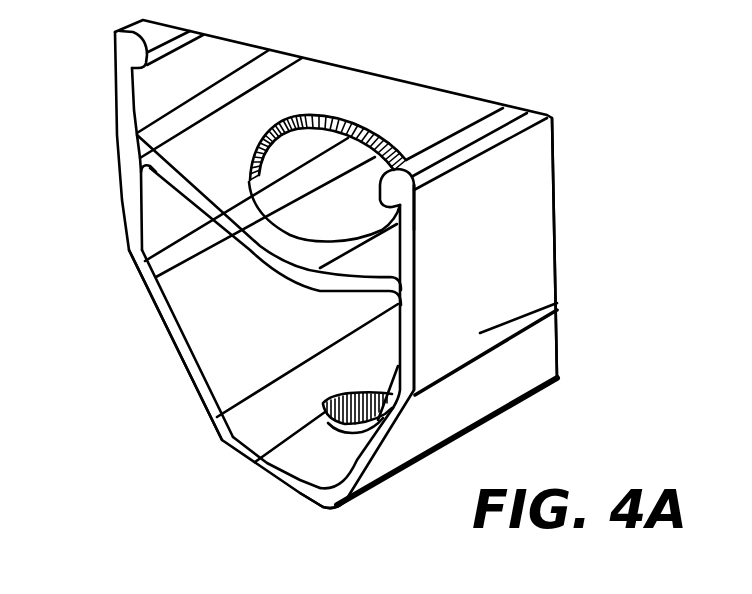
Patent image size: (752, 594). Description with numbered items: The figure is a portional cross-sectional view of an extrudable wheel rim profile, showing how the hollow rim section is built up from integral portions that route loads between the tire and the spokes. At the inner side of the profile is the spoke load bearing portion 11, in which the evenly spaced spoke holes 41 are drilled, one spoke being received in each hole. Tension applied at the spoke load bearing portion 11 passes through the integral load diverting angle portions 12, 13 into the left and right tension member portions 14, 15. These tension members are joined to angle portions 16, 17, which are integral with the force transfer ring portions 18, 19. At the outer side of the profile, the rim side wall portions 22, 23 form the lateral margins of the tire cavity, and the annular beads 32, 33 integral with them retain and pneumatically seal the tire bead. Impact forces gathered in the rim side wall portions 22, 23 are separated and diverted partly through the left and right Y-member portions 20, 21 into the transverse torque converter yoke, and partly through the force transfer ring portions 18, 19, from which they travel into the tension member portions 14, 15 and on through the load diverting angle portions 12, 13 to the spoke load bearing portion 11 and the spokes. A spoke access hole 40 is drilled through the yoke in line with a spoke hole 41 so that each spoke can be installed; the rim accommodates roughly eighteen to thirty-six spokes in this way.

The spoke load bearing portion 11 is at (277, 457).
The load diverting angle portion 12 is at (323, 497).
The load diverting angle portion 13 is at (243, 432).
The left tension member portion 14 is at (353, 467).
The right tension member portion 15 is at (215, 352).
The angle portion 16 is at (557, 317).
The angle portion 17 is at (138, 250).
The force transfer ring portion 18 is at (557, 303).
The force transfer ring portion 19 is at (157, 212).
The left Y-member portion 20 is at (400, 285).
The right Y-member portion 21 is at (140, 158).
The rim side wall portion 22 is at (485, 218).
The rim side wall portion 23 is at (167, 90).
The annular bead 32 is at (398, 193).
The annular bead 33 is at (133, 54).
The spoke access hole 40 is at (358, 177).
The spoke hole 41 is at (350, 422).